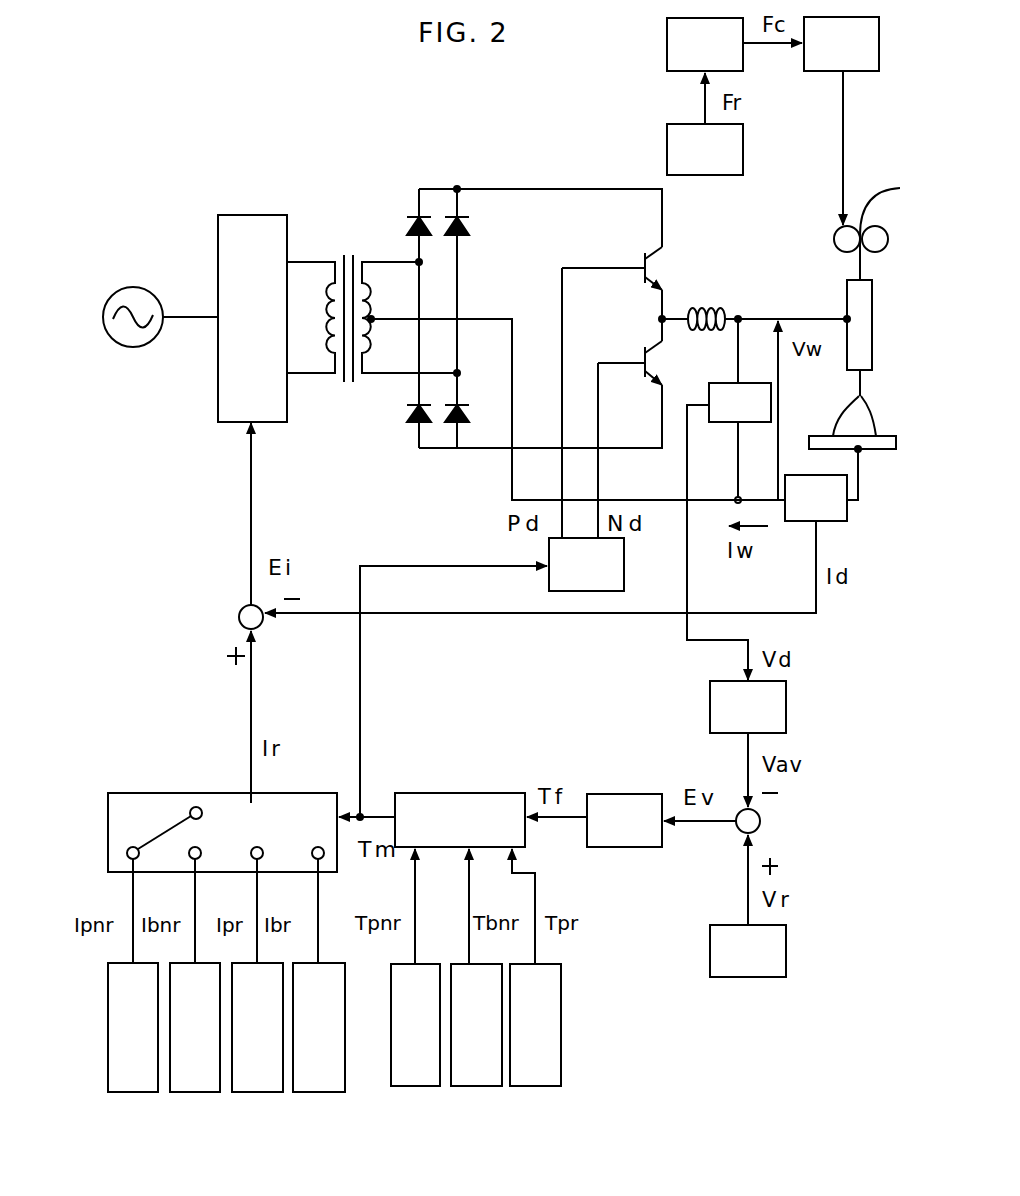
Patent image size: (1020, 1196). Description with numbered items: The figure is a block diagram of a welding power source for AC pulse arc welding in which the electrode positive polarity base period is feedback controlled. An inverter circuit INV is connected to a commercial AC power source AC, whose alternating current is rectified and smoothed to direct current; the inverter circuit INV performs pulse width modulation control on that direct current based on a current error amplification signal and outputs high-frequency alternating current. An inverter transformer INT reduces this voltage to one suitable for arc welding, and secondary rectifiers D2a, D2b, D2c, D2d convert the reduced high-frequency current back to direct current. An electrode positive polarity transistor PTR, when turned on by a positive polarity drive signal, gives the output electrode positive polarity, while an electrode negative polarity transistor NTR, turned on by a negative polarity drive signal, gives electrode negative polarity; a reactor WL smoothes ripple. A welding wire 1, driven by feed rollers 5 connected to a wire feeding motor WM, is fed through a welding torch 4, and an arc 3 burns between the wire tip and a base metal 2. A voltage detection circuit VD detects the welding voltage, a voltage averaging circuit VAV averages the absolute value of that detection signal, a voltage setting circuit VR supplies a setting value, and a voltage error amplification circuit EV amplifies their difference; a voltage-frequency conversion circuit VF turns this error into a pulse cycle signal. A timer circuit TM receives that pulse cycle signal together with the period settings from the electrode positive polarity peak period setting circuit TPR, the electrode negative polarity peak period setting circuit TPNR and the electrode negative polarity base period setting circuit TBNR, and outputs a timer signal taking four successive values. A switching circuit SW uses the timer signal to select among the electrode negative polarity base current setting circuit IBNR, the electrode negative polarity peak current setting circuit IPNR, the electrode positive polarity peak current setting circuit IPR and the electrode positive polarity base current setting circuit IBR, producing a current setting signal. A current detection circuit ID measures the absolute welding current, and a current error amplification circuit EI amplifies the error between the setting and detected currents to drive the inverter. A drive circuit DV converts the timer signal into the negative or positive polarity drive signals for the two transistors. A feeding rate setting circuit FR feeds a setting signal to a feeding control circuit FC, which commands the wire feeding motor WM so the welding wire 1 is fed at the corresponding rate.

The welding wire 1 is at (858, 385).
The base metal 2 is at (876, 450).
The arc 3 is at (840, 411).
The welding torch 4 is at (847, 287).
The feed rollers 5 is at (837, 236).
The commercial AC power source AC is at (126, 287).
The inverter circuit INV is at (276, 214).
The inverter transformer INT is at (338, 255).
The secondary rectifier D2a is at (407, 226).
The secondary rectifier D2b is at (467, 225).
The secondary rectifier D2c is at (452, 422).
The secondary rectifier D2d is at (407, 415).
The electrode positive polarity transistor PTR is at (612, 280).
The electrode negative polarity transistor NTR is at (614, 352).
The reactor WL is at (725, 295).
The voltage detection circuit VD is at (729, 499).
The current detection circuit ID is at (816, 498).
The drive circuit DV is at (586, 564).
The current error amplification circuit EI is at (245, 632).
The switching circuit SW is at (222, 814).
The electrode negative polarity peak current setting circuit IPNR is at (133, 1027).
The electrode negative polarity base current setting circuit IBNR is at (195, 1027).
The electrode positive polarity peak current setting circuit IPR is at (257, 1027).
The electrode positive polarity base current setting circuit IBR is at (319, 1027).
The timer circuit TM is at (460, 820).
The electrode negative polarity peak period setting circuit TPNR is at (415, 1025).
The electrode negative polarity base period setting circuit TBNR is at (476, 1025).
The electrode positive polarity peak period setting circuit TPR is at (535, 1025).
The voltage-frequency conversion circuit VF is at (624, 820).
The voltage error amplification circuit EV is at (774, 834).
The voltage averaging circuit VAV is at (748, 707).
The voltage setting circuit VR is at (748, 951).
The feeding control circuit FC is at (705, 44).
The wire feeding motor WM is at (841, 44).
The feeding rate setting circuit FR is at (705, 149).